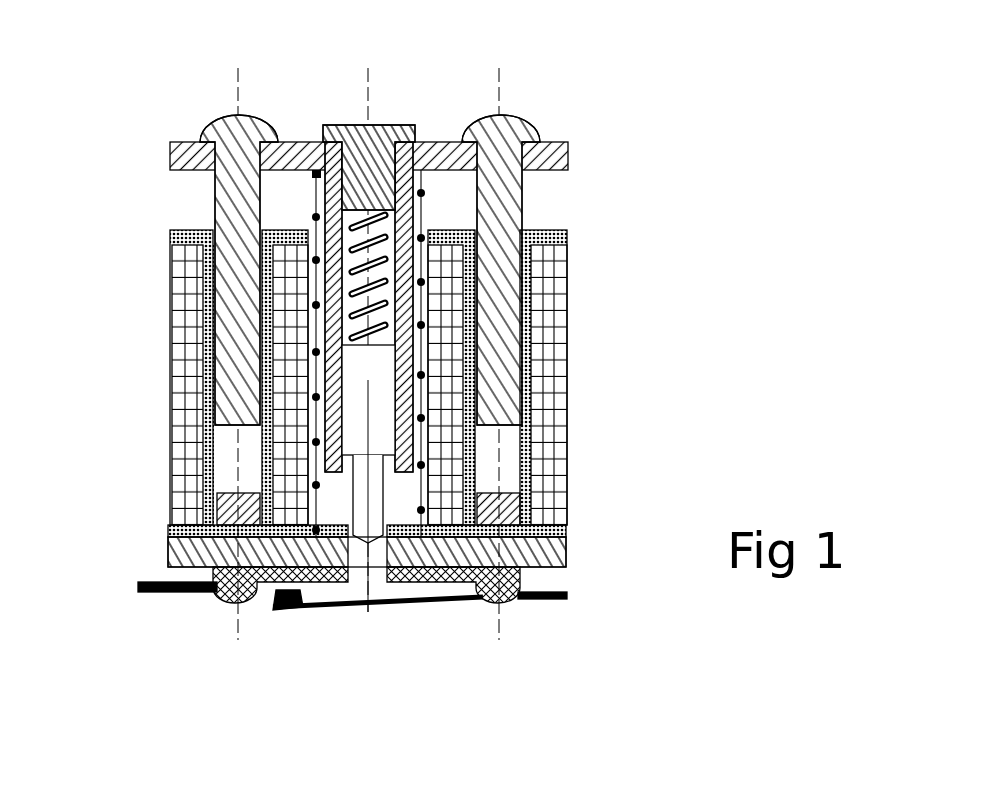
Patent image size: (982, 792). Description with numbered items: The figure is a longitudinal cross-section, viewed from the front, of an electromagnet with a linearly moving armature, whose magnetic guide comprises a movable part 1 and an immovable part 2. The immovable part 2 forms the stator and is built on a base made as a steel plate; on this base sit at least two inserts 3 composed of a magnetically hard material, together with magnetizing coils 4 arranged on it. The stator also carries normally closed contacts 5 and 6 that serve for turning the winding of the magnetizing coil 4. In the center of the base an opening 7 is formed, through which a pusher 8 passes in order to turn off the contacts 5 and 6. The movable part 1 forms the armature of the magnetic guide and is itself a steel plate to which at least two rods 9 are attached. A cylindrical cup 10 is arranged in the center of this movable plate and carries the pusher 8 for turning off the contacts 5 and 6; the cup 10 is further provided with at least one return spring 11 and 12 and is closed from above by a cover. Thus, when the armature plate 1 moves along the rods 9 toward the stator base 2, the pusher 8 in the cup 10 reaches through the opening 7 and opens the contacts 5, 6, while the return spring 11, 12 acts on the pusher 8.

The movable part 1 is at (568, 147).
The immovable part 2 is at (565, 537).
The insert 3 is at (197, 515).
The magnetizing coil 4 is at (567, 253).
The normally closed contact 5 is at (567, 597).
The normally closed contact 6 is at (150, 592).
The opening 7 is at (450, 603).
The pusher 8 is at (383, 390).
The rod 9 is at (217, 127).
The cylindrical cup 10 is at (413, 173).
The return spring 11 is at (421, 325).
The return spring 12 is at (393, 125).